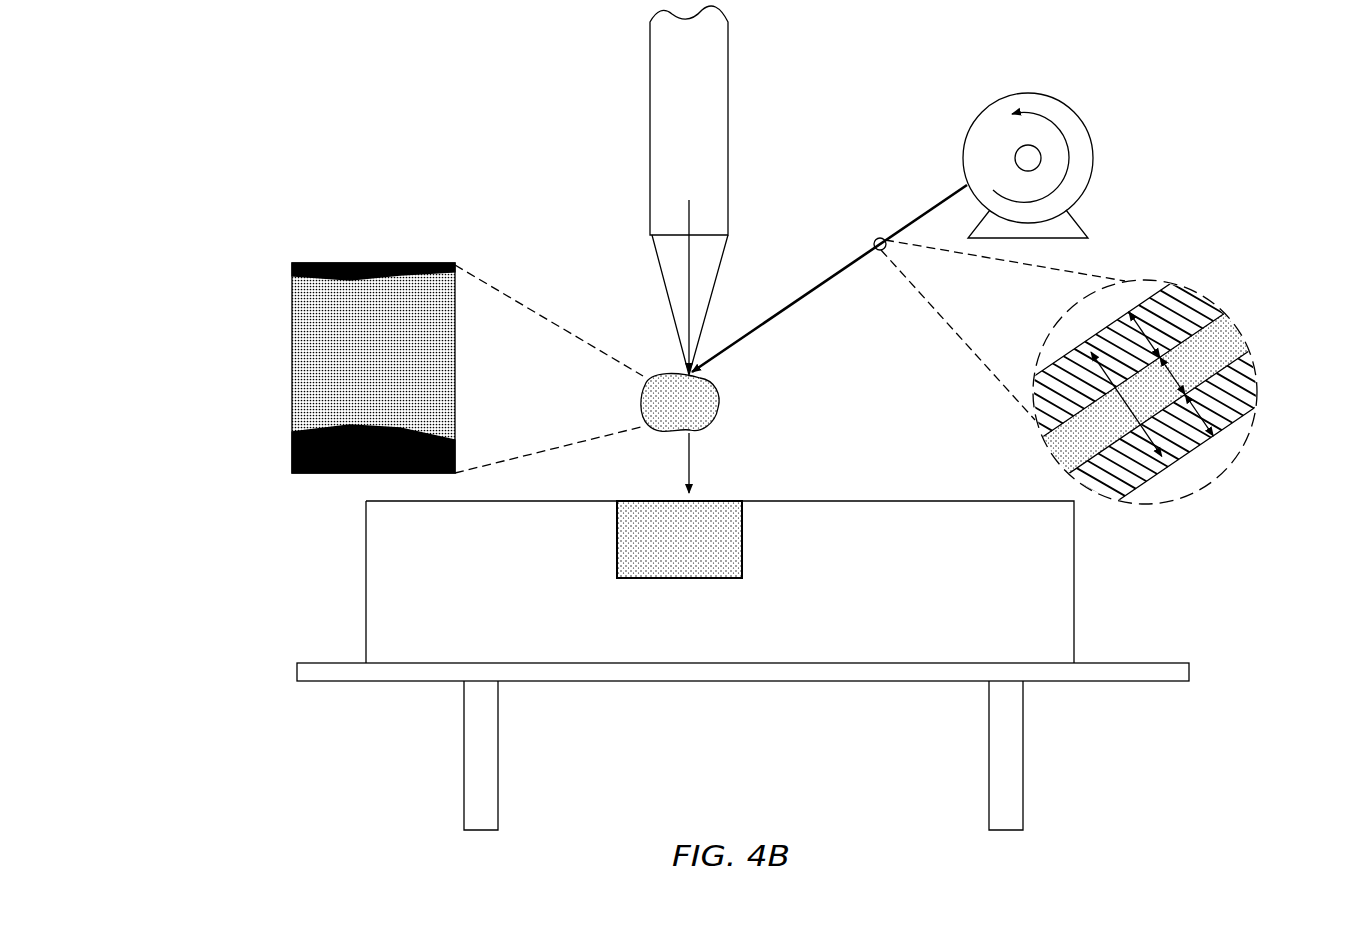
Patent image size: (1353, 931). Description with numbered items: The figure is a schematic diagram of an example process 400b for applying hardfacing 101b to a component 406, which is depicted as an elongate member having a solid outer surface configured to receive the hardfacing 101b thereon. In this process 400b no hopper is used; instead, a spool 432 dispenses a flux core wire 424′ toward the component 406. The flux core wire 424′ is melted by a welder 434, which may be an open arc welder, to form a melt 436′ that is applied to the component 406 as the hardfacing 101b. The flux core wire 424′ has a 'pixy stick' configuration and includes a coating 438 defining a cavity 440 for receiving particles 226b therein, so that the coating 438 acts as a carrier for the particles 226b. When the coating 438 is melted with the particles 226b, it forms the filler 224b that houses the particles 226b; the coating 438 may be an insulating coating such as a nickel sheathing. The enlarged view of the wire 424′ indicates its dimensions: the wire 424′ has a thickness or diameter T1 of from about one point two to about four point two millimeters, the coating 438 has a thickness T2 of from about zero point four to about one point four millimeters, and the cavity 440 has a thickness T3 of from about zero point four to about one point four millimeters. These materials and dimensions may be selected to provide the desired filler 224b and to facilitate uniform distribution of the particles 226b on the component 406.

The process 400b is at (299, 102).
The welder 434 is at (722, 276).
The spool 432 is at (1068, 100).
The flux core wire 424′ is at (918, 217).
The melt 436′ is at (722, 398).
The particles 226b is at (290, 303).
The filler 224b is at (318, 365).
The coating 438 is at (1172, 290).
The cavity 440 is at (1197, 407).
The thickness of the wire T1 is at (1180, 457).
The thickness of the coating T2 is at (1147, 335).
The thickness of the cavity T3 is at (1163, 377).
The component 406 is at (366, 540).
The hardfacing 101b is at (617, 548).